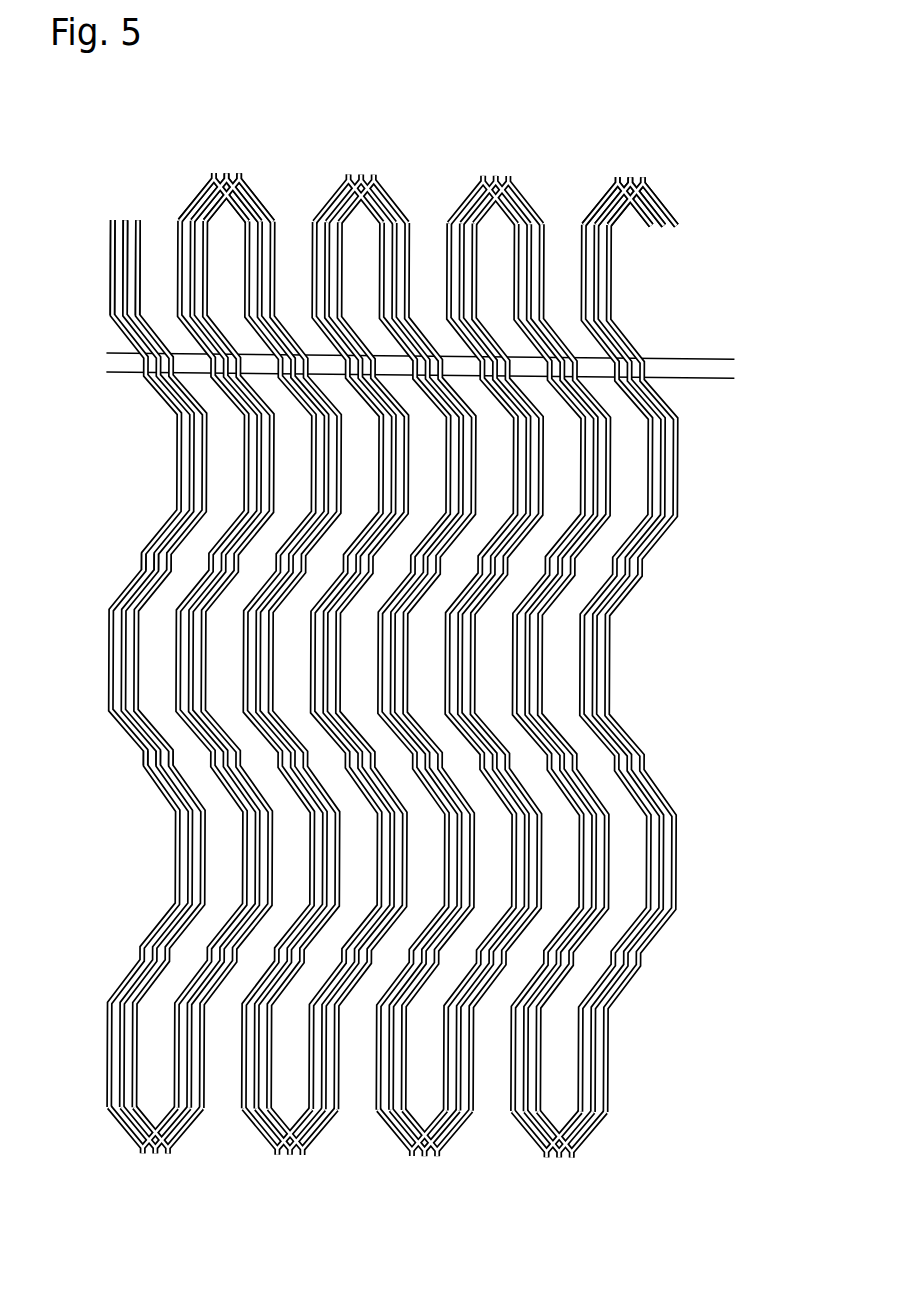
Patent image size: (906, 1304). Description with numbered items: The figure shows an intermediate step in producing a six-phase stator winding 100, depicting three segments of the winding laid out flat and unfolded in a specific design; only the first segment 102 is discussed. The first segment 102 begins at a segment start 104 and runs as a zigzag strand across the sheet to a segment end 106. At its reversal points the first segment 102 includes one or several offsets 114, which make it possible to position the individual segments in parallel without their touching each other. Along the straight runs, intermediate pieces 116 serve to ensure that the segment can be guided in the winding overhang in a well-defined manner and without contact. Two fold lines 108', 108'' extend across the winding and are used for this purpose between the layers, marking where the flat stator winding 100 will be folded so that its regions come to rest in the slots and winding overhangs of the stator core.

The stator winding 100 is at (383, 649).
The offset 114 is at (214, 174).
The segment start 104 is at (110, 230).
The first segment 102 is at (110, 308).
The segment end 106 is at (644, 227).
The fold line 108' is at (449, 321).
The fold line 108'' is at (454, 413).
The intermediate piece 116 is at (142, 560).